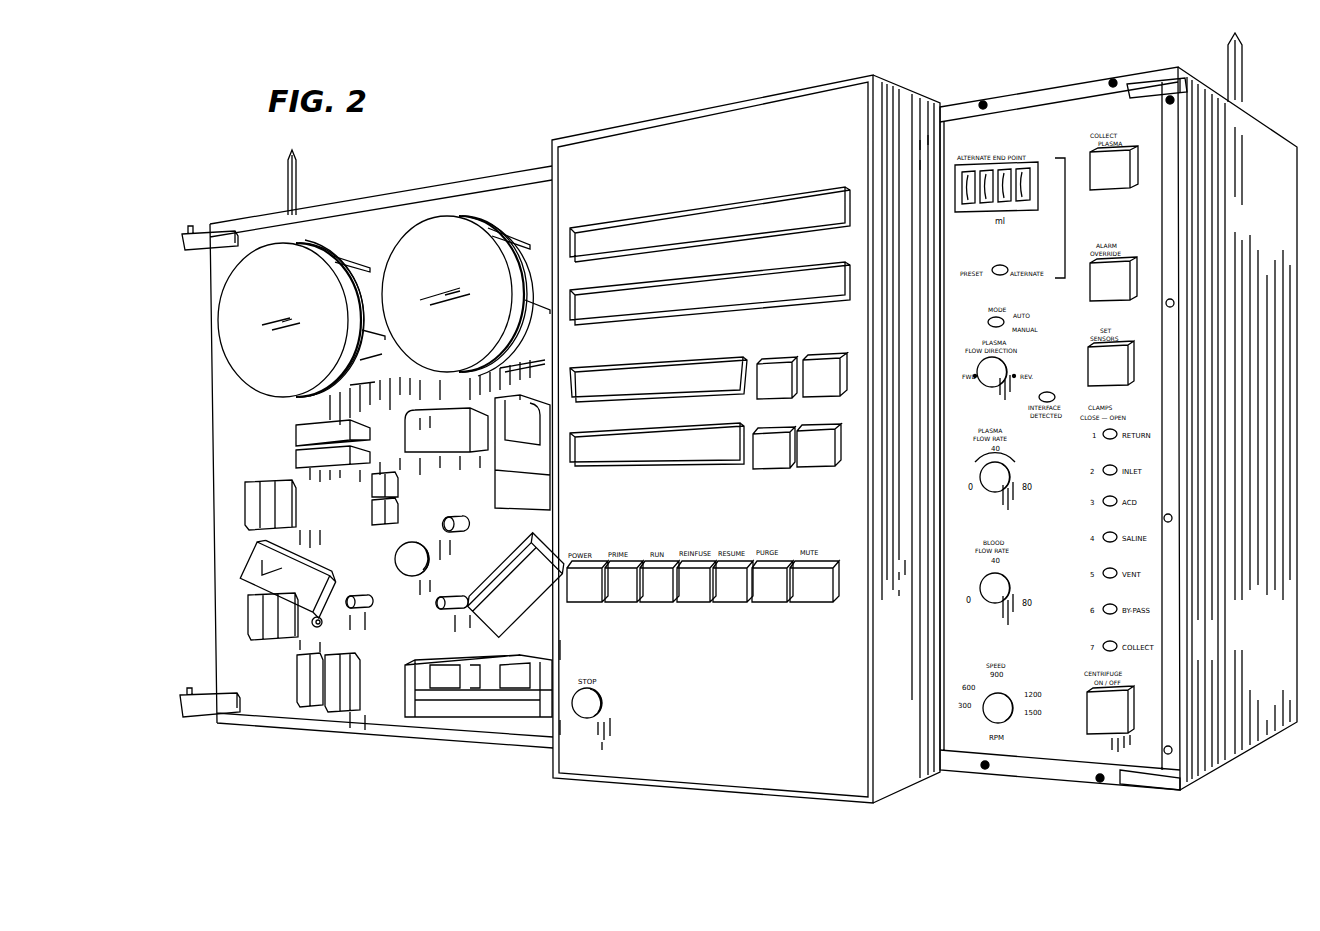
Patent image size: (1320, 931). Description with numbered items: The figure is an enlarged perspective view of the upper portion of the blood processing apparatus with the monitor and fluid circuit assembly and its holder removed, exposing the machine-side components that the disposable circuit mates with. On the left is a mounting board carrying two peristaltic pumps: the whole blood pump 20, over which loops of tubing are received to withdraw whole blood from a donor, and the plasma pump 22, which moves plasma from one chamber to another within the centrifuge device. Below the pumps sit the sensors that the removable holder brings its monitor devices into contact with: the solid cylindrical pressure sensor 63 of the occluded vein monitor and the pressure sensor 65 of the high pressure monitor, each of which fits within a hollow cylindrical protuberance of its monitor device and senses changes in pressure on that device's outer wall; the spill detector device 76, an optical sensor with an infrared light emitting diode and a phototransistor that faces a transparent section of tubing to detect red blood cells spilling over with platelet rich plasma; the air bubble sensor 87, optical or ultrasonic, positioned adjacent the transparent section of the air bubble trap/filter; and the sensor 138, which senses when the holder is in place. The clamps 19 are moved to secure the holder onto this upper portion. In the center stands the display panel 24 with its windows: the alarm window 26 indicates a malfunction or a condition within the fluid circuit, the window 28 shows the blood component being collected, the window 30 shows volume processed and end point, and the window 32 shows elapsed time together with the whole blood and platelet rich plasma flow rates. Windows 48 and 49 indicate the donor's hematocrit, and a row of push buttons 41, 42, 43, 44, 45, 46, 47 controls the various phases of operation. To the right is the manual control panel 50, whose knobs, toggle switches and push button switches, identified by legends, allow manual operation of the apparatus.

The clamps 19 is at (265, 570).
The whole blood pump 20 is at (448, 224).
The plasma pump 22 is at (296, 253).
The display panel 24 is at (630, 138).
The alarm window 26 is at (575, 242).
The window 28 is at (820, 283).
The window 30 is at (605, 386).
The window 32 is at (626, 452).
The push button 41 is at (580, 595).
The push button 42 is at (615, 595).
The push button 43 is at (655, 595).
The push button 44 is at (694, 595).
The push button 45 is at (733, 597).
The push button 46 is at (771, 597).
The push button 47 is at (814, 597).
The window 48 is at (780, 378).
The window 49 is at (830, 383).
The manual control panel 50 is at (1140, 212).
The sensor 63 is at (450, 518).
The sensor 65 is at (455, 610).
The spill detector device 76 is at (390, 498).
The air bubble sensor 87 is at (348, 612).
The sensor 138 is at (398, 560).